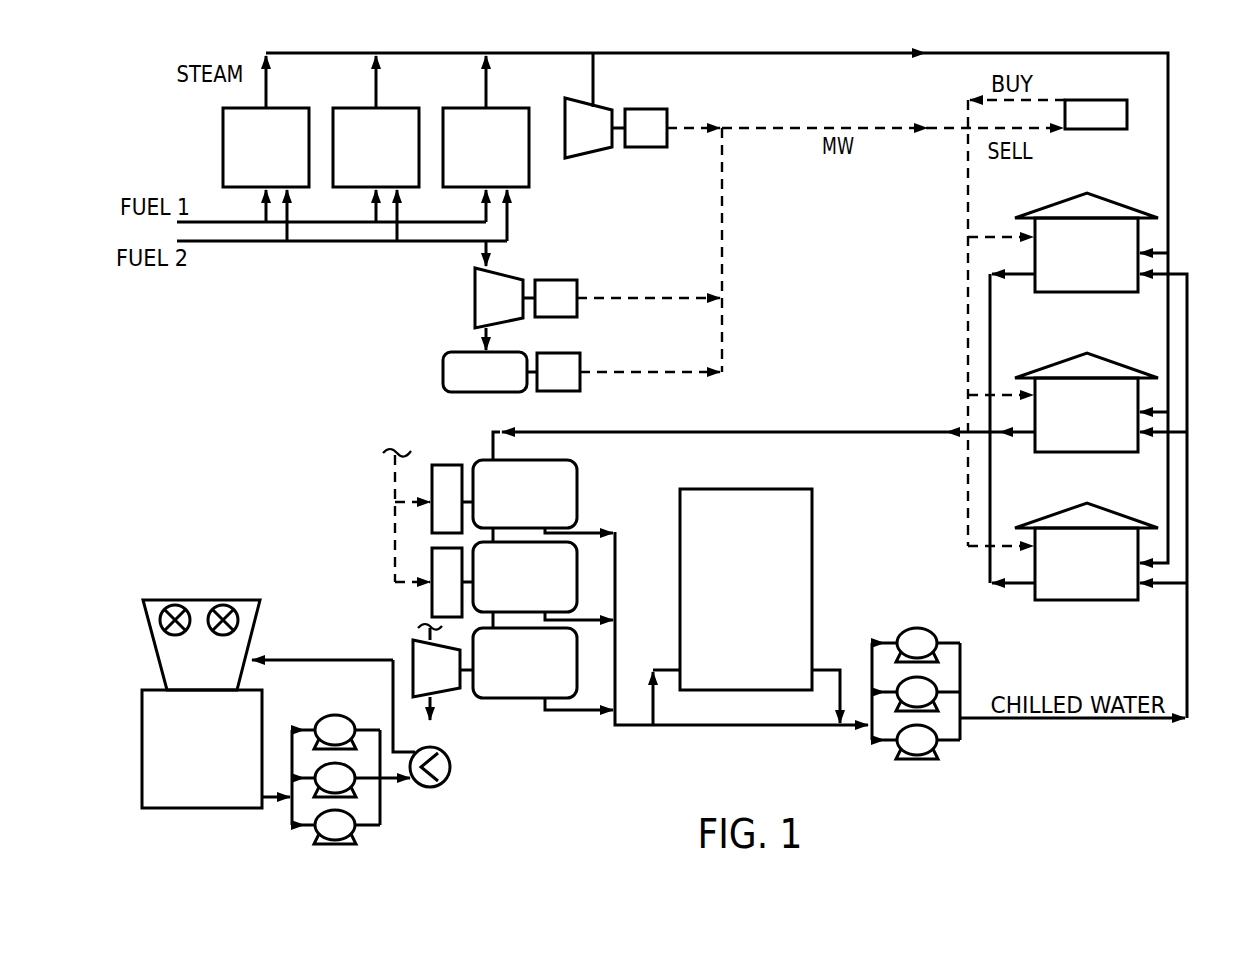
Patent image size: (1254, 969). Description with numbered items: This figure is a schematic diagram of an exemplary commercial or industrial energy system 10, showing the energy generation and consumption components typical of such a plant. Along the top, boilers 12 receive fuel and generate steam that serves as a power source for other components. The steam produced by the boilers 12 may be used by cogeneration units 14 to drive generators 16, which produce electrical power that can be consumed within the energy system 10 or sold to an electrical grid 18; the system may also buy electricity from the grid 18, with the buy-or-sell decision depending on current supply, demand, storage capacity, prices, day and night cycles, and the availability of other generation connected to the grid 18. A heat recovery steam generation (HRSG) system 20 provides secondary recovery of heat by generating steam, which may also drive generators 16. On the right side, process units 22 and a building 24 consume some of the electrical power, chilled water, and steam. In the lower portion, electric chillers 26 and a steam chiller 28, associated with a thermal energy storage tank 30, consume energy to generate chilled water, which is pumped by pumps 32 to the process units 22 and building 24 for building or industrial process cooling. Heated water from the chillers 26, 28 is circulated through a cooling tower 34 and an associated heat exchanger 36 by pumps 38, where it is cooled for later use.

The energy system 10 is at (1188, 50).
The boiler 12 is at (281, 108).
The cogeneration unit 14 is at (603, 107).
The generator 16 is at (650, 109).
The electrical grid 18 is at (1100, 100).
The heat recovery steam generation (HRSG) system 20 is at (443, 372).
The process unit 22 is at (1122, 212).
The building 24 is at (1122, 522).
The electric chiller 26 is at (577, 500).
The steam chiller 28 is at (522, 698).
The thermal energy storage tank 30 is at (812, 590).
The pump 32 is at (935, 632).
The cooling tower 34 is at (200, 598).
The heat exchanger 36 is at (445, 782).
The pump 38 is at (320, 713).